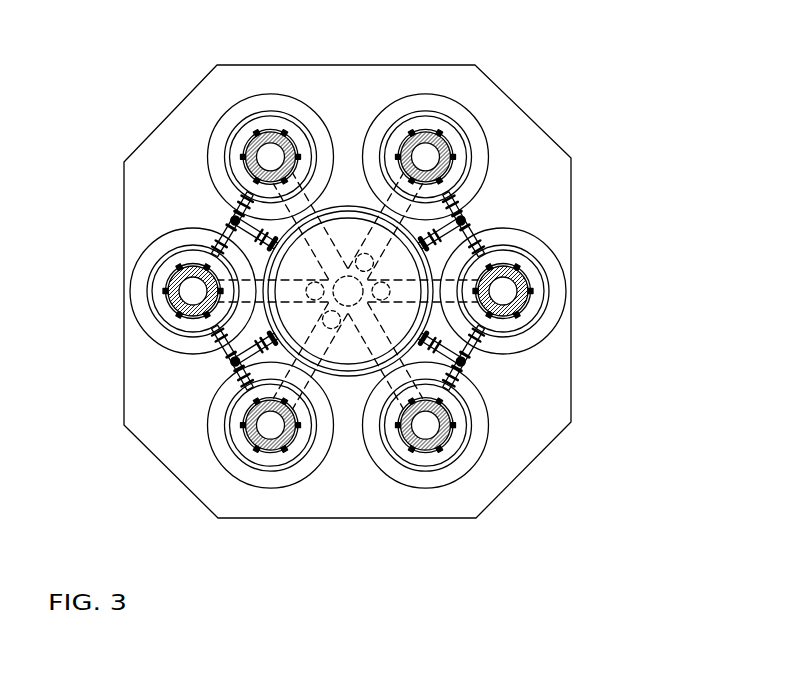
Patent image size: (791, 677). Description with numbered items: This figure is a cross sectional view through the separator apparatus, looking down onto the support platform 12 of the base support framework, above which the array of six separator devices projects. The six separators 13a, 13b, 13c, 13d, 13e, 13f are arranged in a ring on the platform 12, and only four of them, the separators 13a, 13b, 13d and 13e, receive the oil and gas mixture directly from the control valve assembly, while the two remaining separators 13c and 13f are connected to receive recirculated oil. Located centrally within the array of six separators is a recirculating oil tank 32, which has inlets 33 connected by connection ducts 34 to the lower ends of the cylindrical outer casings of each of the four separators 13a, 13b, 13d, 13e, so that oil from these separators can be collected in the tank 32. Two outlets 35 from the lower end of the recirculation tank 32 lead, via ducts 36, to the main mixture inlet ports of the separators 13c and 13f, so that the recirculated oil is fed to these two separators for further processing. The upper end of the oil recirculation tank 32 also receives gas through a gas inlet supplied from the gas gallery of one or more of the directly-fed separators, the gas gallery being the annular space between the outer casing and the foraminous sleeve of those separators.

The support platform 12 is at (535, 428).
The separator 13a is at (476, 141).
The separator 13b is at (558, 290).
The separator 13c is at (457, 470).
The separator 13d is at (257, 478).
The separator 13e is at (143, 322).
The separator 13f is at (217, 139).
The recirculating oil tank 32 is at (348, 206).
The inlets 33 is at (372, 262).
The connection ducts 34 is at (474, 223).
The outlets 35 is at (272, 258).
The ducts 36 is at (473, 358).